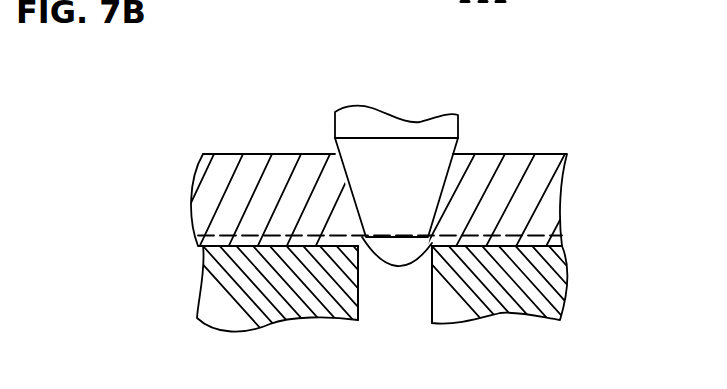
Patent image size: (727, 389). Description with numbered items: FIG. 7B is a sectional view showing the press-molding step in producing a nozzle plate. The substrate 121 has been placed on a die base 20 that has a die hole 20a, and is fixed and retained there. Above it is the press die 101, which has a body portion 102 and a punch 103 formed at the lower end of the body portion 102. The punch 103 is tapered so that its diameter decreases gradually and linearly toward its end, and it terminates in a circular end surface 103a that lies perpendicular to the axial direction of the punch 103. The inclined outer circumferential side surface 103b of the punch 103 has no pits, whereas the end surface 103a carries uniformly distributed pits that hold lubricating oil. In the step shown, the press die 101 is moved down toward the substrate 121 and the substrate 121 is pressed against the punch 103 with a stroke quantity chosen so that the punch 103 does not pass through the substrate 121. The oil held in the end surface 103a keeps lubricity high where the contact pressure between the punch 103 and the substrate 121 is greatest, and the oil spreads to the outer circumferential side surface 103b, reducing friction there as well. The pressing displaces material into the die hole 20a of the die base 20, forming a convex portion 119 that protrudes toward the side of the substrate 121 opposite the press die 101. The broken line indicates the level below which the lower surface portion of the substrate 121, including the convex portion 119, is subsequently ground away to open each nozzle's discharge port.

The press die 101 is at (417, 213).
The body portion 102 is at (453, 126).
The punch 103 is at (441, 195).
The end surface 103a is at (375, 240).
The outer circumferential side surface 103b is at (393, 155).
The convex portion 119 is at (392, 258).
The substrate 121 is at (547, 199).
The die base 20 is at (556, 265).
The die hole 20a is at (430, 307).